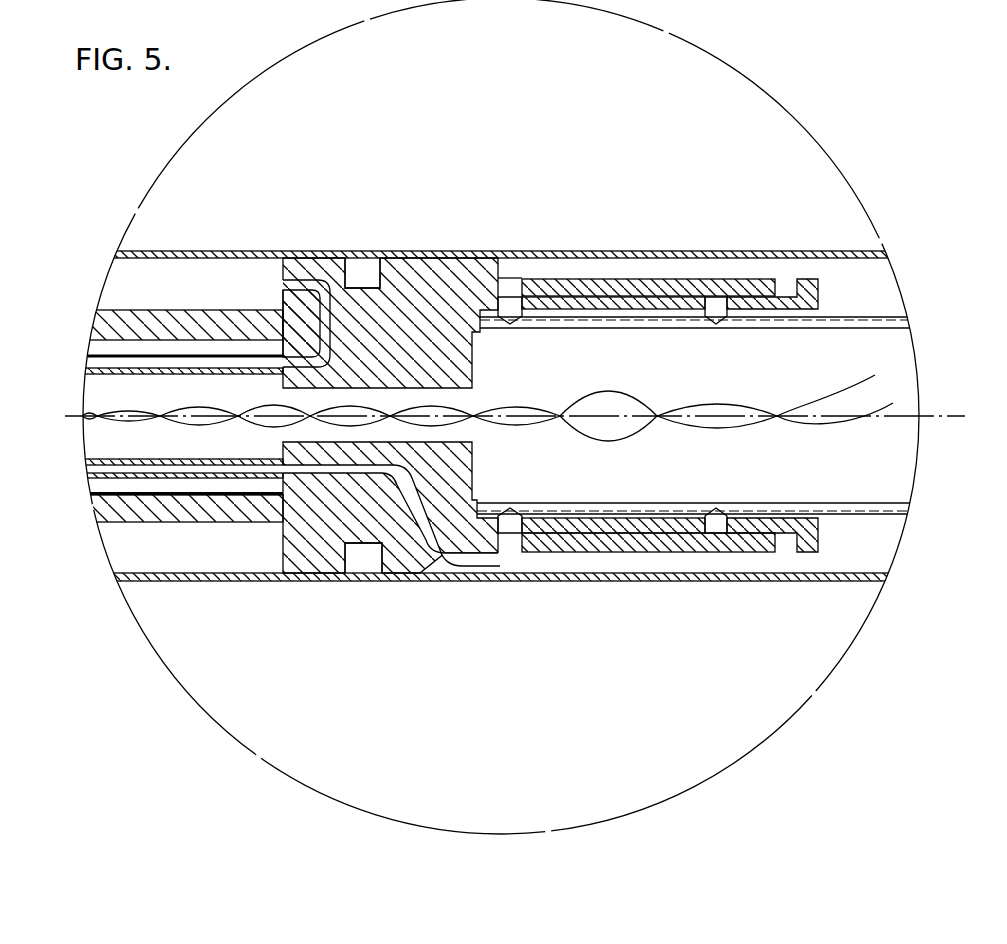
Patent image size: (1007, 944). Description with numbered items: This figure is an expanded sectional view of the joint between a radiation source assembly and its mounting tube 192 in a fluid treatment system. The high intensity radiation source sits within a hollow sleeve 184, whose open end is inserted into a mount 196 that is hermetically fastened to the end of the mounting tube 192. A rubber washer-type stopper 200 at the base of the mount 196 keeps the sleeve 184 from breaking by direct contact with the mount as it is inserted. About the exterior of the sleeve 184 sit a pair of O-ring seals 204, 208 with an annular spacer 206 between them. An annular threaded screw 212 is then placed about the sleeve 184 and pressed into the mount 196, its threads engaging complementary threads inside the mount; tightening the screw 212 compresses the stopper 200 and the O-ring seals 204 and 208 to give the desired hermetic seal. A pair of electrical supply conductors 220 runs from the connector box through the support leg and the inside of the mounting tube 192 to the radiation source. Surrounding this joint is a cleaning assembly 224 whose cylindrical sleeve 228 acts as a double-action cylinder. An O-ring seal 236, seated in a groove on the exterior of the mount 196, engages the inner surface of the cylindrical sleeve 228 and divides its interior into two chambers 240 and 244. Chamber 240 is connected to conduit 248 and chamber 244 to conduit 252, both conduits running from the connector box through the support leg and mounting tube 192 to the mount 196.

The hollow sleeve 184 is at (878, 318).
The mounting tube 192 is at (444, 281).
The mount 196 is at (648, 553).
The rubber washer-type stopper 200 is at (478, 503).
The O-ring seal 204 is at (506, 297).
The annular spacer 206 is at (607, 534).
The O-ring seal 208 is at (715, 300).
The annular threaded screw 212 is at (822, 302).
The electrical supply conductors 220 is at (660, 397).
The cleaning assembly 224 is at (730, 592).
The cylindrical sleeve 228 is at (172, 581).
The O-ring seal 236 is at (365, 270).
The chamber 240 is at (248, 277).
The chamber 244 is at (800, 280).
The conduit 248 is at (160, 333).
The conduit 252 is at (321, 480).